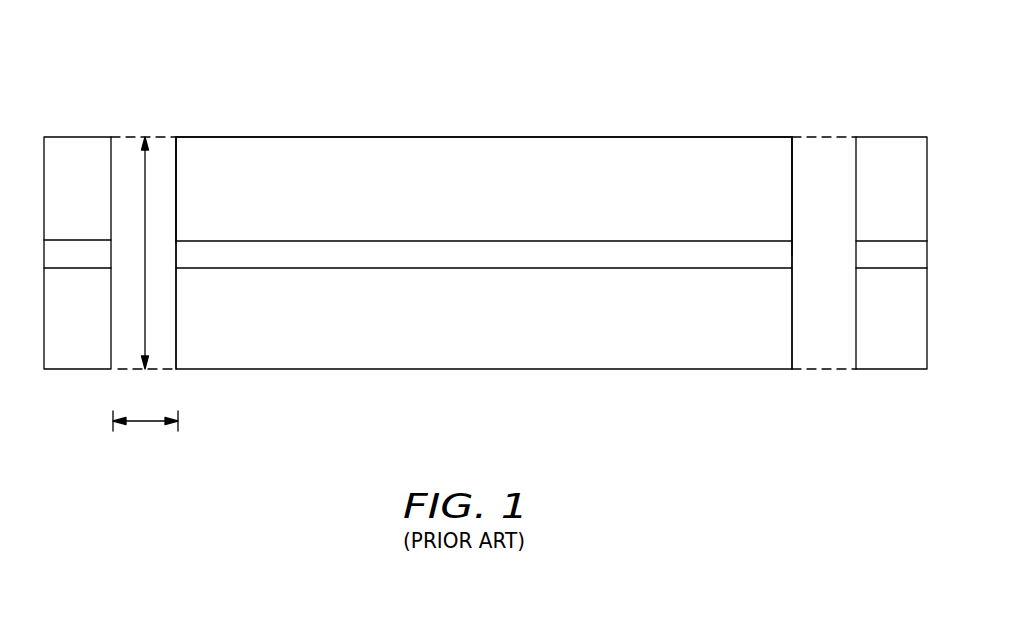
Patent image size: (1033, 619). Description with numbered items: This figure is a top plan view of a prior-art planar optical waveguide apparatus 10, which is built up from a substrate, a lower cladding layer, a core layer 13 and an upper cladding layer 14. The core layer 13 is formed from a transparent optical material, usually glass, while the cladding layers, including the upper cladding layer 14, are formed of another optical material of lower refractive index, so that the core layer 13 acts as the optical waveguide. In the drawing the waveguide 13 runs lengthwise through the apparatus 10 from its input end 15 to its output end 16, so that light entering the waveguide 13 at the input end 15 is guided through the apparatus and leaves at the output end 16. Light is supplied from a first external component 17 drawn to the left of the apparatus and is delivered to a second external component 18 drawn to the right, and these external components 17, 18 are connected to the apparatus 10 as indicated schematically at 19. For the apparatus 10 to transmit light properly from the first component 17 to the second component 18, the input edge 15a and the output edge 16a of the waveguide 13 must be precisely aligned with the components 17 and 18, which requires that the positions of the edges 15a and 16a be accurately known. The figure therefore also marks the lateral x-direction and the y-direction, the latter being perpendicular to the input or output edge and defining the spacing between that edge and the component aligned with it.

The planar optical waveguide apparatus 10 is at (779, 47).
The core layer 13 is at (597, 240).
The upper cladding layer 14 is at (282, 157).
The input end 15 is at (176, 138).
The input edge 15a is at (176, 243).
The output end 16 is at (792, 160).
The output edge 16a is at (792, 255).
The first external component 17 is at (70, 137).
The second external component 18 is at (876, 137).
The connection 19 is at (124, 371).